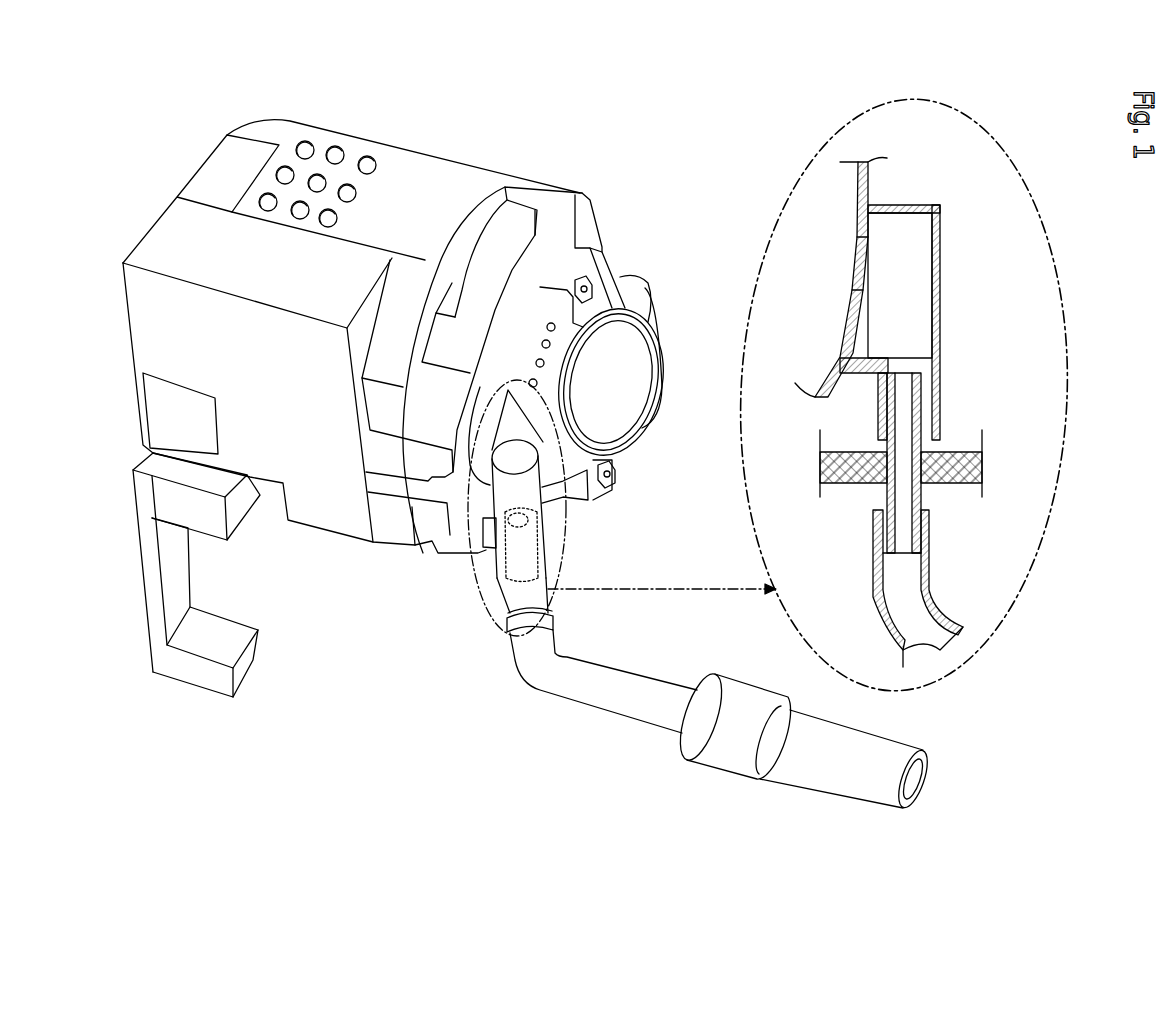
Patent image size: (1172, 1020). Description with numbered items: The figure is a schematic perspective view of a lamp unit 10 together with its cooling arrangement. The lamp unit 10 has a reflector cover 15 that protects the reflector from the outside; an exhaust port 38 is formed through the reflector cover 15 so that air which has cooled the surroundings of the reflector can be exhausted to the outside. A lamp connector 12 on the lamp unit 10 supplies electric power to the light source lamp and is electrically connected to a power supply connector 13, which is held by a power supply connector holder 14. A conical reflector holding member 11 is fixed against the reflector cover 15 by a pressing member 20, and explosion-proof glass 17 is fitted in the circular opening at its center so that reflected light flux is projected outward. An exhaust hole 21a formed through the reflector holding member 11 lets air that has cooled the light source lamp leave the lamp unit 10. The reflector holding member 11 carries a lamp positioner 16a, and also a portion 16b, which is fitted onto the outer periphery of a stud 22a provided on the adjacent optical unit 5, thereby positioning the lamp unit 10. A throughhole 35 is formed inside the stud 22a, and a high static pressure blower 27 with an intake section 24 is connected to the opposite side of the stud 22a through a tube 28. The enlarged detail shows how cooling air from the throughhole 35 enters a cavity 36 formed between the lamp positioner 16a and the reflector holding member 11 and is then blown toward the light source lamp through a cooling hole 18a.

The lamp unit 10 is at (166, 170).
The reflector cover 15 is at (425, 173).
The exhaust port 38 is at (337, 152).
The lamp connector 12 is at (168, 414).
The power supply connector 13 is at (182, 502).
The power supply connector holder 14 is at (187, 683).
The exhaust hole 21a is at (553, 323).
The reflector holding member 11 is at (587, 225).
The pressing member 20 is at (555, 225).
The explosion-proof glass 17 is at (617, 397).
The lamp positioner 16a is at (503, 557).
The pipe portion 16b is at (540, 535).
The stud 22a is at (507, 593).
The tube 28 is at (592, 665).
The high static pressure blower 27 is at (805, 787).
The intake section 24 is at (915, 778).
The cavity 36 is at (910, 242).
The cooling hole 18a is at (863, 290).
The throughhole 35 is at (913, 400).
The optical unit 5 is at (983, 468).